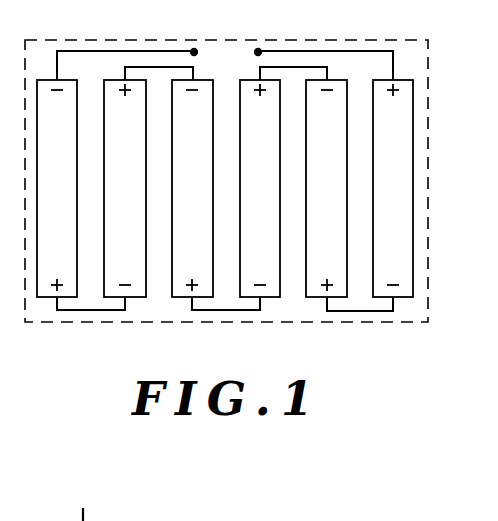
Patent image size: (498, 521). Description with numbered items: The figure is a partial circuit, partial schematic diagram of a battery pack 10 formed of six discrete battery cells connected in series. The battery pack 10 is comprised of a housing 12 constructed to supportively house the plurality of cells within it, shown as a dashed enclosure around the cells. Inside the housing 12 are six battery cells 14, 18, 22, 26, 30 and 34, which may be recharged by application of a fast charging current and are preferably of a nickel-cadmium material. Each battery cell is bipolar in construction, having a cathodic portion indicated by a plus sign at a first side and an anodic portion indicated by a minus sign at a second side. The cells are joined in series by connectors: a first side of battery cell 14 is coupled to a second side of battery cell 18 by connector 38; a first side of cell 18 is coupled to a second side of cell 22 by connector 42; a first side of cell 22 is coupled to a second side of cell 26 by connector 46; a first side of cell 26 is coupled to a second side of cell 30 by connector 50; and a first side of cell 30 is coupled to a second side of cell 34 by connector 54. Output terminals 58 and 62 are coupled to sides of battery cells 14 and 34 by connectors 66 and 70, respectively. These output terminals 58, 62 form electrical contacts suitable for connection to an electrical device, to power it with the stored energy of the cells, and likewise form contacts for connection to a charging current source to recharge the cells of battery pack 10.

The battery pack 10 is at (40, 8).
The housing 12 is at (378, 38).
The battery cell 14 is at (50, 78).
The battery cell 18 is at (137, 297).
The battery cell 22 is at (213, 97).
The battery cell 26 is at (280, 297).
The battery cell 30 is at (348, 170).
The battery cell 34 is at (412, 297).
The connector 38 is at (90, 310).
The connector 42 is at (125, 67).
The connector 46 is at (227, 310).
The connector 50 is at (327, 67).
The connector 54 is at (368, 311).
The output terminal 58 is at (195, 50).
The output terminal 62 is at (258, 50).
The connector 66 is at (97, 50).
The connector 70 is at (303, 52).